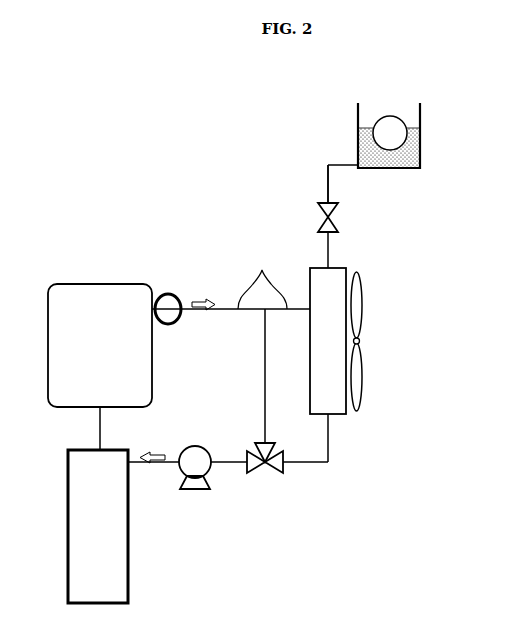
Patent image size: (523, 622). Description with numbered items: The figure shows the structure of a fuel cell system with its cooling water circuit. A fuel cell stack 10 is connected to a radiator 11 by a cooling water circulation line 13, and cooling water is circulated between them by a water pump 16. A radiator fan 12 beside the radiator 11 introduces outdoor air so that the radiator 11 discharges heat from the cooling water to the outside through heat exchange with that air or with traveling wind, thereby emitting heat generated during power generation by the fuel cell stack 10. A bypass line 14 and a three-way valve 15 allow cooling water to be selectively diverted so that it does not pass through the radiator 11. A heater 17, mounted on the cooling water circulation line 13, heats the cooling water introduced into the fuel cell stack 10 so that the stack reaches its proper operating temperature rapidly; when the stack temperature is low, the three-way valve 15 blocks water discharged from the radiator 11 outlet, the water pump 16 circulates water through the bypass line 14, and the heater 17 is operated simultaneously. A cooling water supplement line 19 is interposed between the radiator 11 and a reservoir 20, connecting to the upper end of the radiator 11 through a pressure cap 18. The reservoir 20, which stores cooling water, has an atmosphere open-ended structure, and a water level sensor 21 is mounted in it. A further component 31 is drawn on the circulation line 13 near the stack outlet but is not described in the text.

The fuel cell stack 10 is at (100, 284).
The radiator 11 is at (346, 376).
The radiator fan 12 is at (362, 300).
The cooling water circulation line 13 is at (262, 279).
The bypass line 14 is at (265, 423).
The 3-way valve 15 is at (275, 475).
The water pump 16 is at (210, 470).
The heater 17 is at (68, 456).
The pressure cap 18 is at (338, 225).
The cooling water supplement line 19 is at (328, 165).
The reservoir 20 is at (420, 160).
The water level sensor 21 is at (405, 118).
The sensor 31 is at (175, 293).